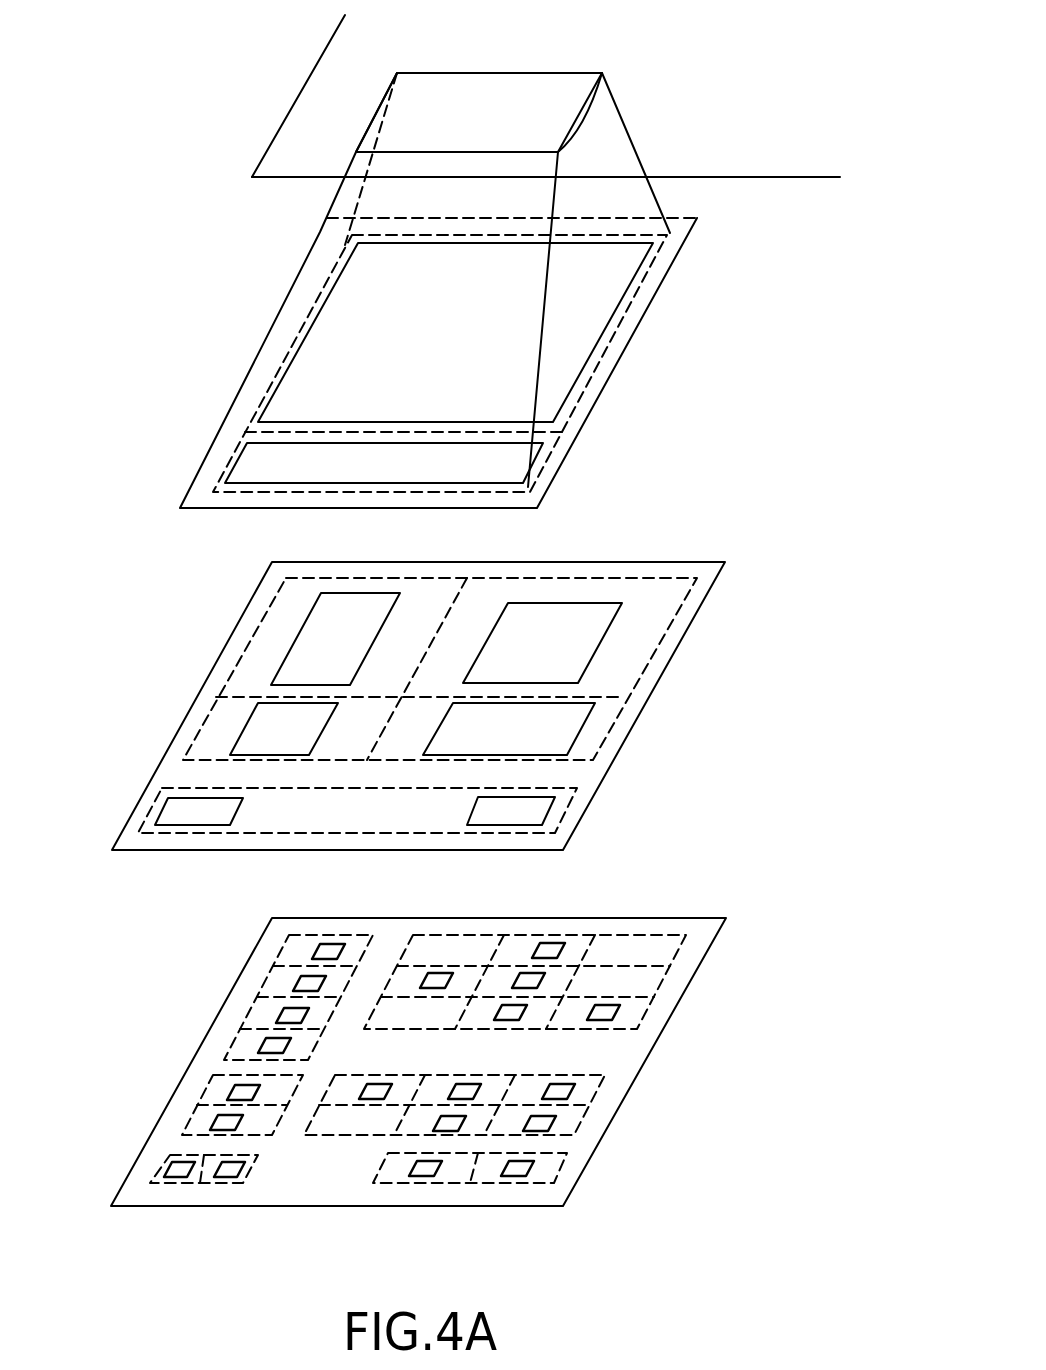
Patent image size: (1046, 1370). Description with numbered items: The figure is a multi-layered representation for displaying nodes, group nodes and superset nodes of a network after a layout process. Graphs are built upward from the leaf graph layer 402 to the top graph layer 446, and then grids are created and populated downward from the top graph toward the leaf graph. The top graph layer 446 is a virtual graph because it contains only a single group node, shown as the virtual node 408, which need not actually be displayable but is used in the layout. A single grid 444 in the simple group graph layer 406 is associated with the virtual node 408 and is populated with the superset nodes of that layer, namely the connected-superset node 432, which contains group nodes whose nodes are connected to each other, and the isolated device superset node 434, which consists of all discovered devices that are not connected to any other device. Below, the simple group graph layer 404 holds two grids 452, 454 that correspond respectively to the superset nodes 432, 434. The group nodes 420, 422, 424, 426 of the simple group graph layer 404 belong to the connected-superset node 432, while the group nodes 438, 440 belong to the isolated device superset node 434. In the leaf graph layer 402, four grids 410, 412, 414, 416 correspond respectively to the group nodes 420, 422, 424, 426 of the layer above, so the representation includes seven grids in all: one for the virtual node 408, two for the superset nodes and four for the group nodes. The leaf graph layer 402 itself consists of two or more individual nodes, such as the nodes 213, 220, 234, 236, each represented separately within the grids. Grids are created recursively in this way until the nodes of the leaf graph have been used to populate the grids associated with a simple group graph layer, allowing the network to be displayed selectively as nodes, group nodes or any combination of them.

The virtual node 408 is at (573, 72).
The top graph layer 446 is at (267, 178).
The simple group graph layer 406 is at (203, 509).
The grid 444 is at (615, 332).
The connected-superset node 432 is at (453, 345).
The isolated device superset node 434 is at (472, 463).
The simple group graph layer 404 is at (165, 852).
The grid 452 is at (203, 720).
The grid 454 is at (157, 803).
The group node 420 is at (291, 646).
The group node 424 is at (583, 603).
The group node 422 is at (248, 722).
The group node 426 is at (583, 732).
The group node 438 is at (213, 825).
The group node 440 is at (498, 825).
The leaf graph layer 402 is at (214, 1022).
The grid 410 is at (358, 937).
The grid 414 is at (690, 933).
The grid 412 is at (178, 1136).
The grid 416 is at (608, 1077).
The node 213 is at (233, 1088).
The node 220 is at (213, 1118).
The node 234 is at (550, 1120).
The node 236 is at (526, 1163).